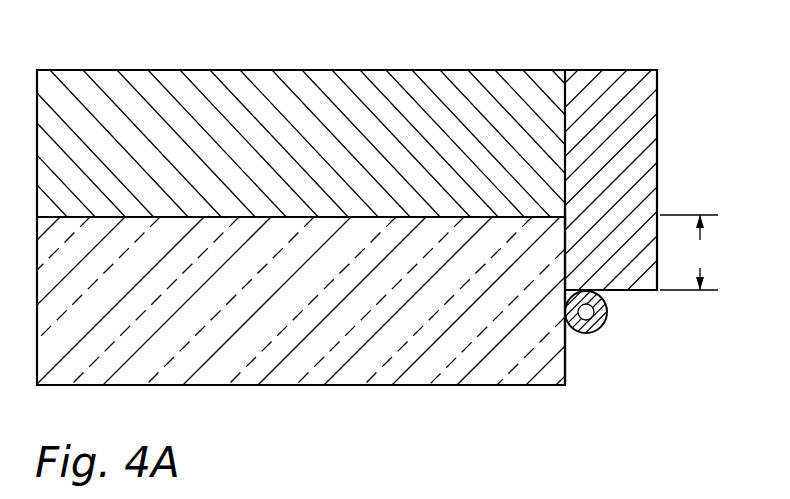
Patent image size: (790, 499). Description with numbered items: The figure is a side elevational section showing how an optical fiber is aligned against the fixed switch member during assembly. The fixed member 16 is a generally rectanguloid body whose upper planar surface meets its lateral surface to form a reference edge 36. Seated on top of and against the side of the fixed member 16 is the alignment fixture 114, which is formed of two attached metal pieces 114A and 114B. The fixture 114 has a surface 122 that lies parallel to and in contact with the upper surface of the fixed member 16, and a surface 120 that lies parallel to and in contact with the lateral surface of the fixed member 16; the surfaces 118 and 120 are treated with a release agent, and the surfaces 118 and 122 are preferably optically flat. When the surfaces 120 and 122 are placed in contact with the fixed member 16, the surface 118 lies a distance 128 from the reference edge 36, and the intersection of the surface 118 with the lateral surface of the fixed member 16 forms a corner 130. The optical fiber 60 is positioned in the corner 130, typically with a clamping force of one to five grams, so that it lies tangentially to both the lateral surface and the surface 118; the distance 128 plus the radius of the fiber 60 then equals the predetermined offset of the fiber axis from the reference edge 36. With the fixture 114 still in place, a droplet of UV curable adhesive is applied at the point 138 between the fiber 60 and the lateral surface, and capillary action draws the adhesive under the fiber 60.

The alignment fixture 114 is at (498, 58).
The metal piece 114A is at (358, 88).
The metal piece 114B is at (650, 88).
The fixed member 16 is at (500, 387).
The surface 122 is at (420, 220).
The surface 120 is at (567, 258).
The reference edge 36 is at (566, 216).
The surface 118 is at (640, 293).
The distance 128 is at (691, 252).
The optical fiber 60 is at (606, 322).
The corner 130 is at (563, 298).
The point 138 is at (570, 338).